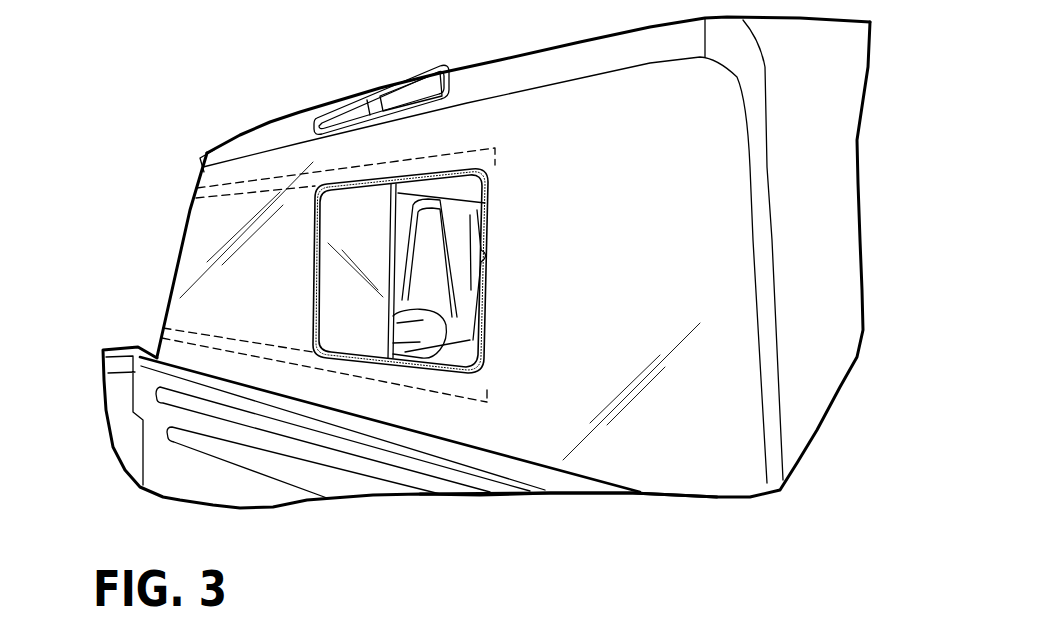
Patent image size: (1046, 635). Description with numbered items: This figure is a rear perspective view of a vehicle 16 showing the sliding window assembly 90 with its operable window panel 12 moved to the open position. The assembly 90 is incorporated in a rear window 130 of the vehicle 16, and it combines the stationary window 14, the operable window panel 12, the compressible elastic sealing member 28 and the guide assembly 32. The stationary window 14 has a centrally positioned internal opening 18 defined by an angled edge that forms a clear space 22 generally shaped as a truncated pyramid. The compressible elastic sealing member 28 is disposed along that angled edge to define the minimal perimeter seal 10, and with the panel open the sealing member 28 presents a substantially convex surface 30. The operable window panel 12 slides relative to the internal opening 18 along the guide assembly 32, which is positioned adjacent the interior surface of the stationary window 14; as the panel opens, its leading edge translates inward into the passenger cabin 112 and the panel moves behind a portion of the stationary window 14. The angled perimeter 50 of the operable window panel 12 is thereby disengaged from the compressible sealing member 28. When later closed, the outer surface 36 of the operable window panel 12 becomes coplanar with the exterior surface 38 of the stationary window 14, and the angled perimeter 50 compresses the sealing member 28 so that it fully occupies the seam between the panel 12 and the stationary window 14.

The minimal perimeter seal 10 is at (427, 160).
The operable window panel 12 is at (365, 215).
The stationary window 14 is at (582, 112).
The vehicle 16 is at (198, 135).
The internal opening 18 is at (492, 230).
The clear space 22 is at (447, 268).
The compressible elastic sealing member 28 is at (318, 268).
The substantially convex surface 30 is at (306, 230).
The guide assembly 32 is at (223, 352).
The outer surface 36 is at (339, 329).
The exterior surface 38 is at (657, 233).
The angled perimeter 50 is at (396, 375).
The sliding window assembly 90 is at (359, 395).
The passenger cabin 112 is at (464, 190).
The rear window 130 is at (638, 452).